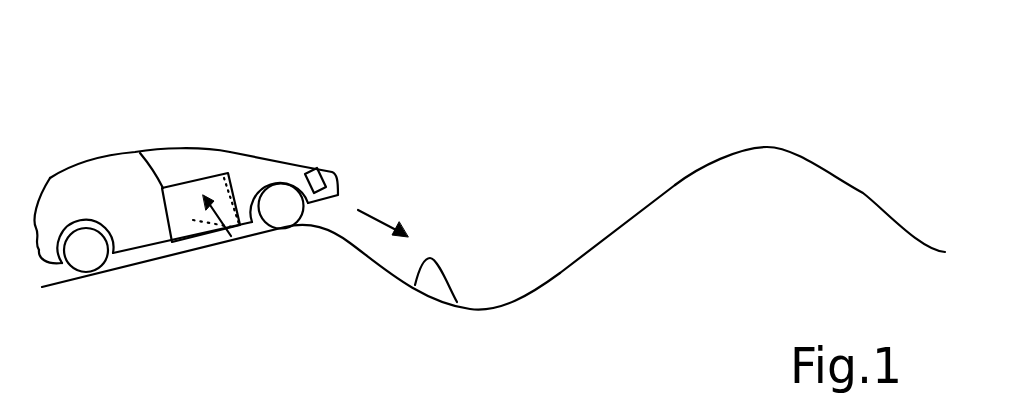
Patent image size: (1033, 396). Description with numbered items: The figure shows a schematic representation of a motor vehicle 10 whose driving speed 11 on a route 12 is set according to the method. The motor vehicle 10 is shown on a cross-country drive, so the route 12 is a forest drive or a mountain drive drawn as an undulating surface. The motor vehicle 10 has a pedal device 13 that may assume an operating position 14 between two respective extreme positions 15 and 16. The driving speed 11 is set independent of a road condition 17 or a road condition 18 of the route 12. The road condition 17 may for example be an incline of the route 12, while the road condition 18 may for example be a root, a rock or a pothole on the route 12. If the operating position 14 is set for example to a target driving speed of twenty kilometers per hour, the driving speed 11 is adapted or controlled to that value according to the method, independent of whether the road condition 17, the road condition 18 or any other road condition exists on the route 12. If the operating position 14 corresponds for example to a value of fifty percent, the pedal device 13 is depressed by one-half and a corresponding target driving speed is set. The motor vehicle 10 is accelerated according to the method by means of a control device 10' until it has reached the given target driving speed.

The motor vehicle 10 is at (186, 155).
The control device 10' is at (332, 123).
The driving speed 11 is at (378, 216).
The route 12 is at (863, 193).
The pedal device 13 is at (140, 153).
The operating position 14 is at (233, 237).
The first extreme position 15 is at (210, 177).
The second extreme position 16 is at (218, 224).
The road condition 17 is at (675, 185).
The road condition 18 is at (441, 258).